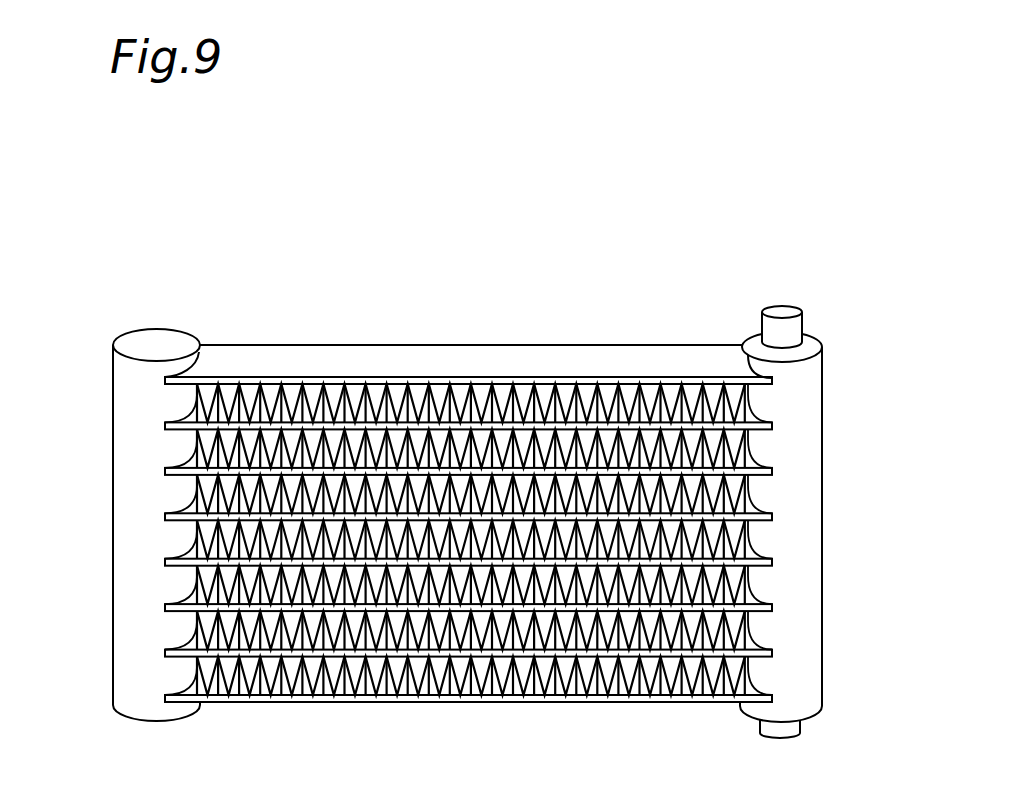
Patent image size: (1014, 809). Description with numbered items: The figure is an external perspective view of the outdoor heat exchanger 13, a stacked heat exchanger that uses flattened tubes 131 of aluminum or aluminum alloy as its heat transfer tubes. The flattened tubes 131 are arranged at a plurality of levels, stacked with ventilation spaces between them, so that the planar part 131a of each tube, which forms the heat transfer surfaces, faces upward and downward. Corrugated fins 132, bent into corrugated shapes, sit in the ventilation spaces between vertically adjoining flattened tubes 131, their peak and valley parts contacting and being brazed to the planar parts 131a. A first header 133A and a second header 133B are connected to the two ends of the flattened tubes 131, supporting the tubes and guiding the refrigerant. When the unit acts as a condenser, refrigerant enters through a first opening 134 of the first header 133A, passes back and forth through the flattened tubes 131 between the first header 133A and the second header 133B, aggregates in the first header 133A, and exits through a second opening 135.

The outdoor heat exchanger 13 is at (733, 229).
The flattened tubes 131 is at (773, 424).
The planar part 131a is at (425, 358).
The corrugated fins 132 is at (356, 377).
The first header 133A is at (817, 515).
The second header 133B is at (121, 522).
The first opening 134 is at (798, 323).
The second opening 135 is at (800, 727).